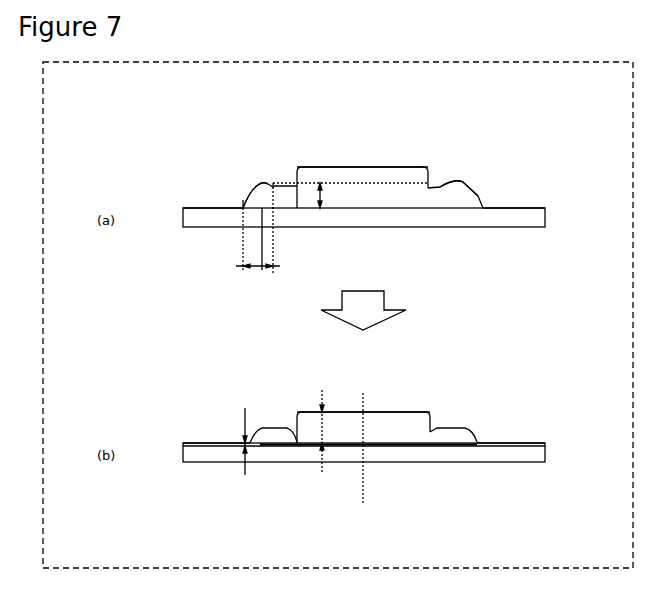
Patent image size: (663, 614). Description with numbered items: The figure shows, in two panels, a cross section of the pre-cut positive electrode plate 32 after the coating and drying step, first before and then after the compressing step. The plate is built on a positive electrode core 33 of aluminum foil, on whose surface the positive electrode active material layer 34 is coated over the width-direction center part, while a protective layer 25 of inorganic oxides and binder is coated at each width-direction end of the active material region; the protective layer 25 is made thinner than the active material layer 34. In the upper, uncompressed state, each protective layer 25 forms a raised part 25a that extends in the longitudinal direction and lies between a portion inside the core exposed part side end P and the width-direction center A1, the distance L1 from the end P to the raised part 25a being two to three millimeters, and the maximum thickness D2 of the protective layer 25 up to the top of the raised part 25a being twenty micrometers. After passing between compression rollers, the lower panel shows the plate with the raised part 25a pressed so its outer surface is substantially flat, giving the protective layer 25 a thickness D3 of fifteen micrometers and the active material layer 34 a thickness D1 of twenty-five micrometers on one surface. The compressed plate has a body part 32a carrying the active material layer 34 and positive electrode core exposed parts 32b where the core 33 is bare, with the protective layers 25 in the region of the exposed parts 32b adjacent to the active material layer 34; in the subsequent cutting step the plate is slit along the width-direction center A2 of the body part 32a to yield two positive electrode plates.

The pre-cut positive electrode plate 32 is at (195, 208).
The body part 32a is at (362, 167).
The positive electrode core exposed part 32b is at (207, 207).
The positive electrode core 33 is at (200, 443).
The positive electrode active material layer 34 is at (322, 167).
The protective layer 25 is at (285, 195).
The raised part 25a is at (255, 190).
The core exposed part side end P is at (243, 206).
The thickness of positive electrode active material layer D1 is at (323, 455).
The maximum thickness of protective layer before compression D2 is at (322, 196).
The thickness of protective layer after compression D3 is at (243, 448).
The distance from core exposed part side end to raised part L1 is at (256, 270).
The width-direction center A1 is at (276, 248).
The width-direction center of body part A2 is at (366, 480).